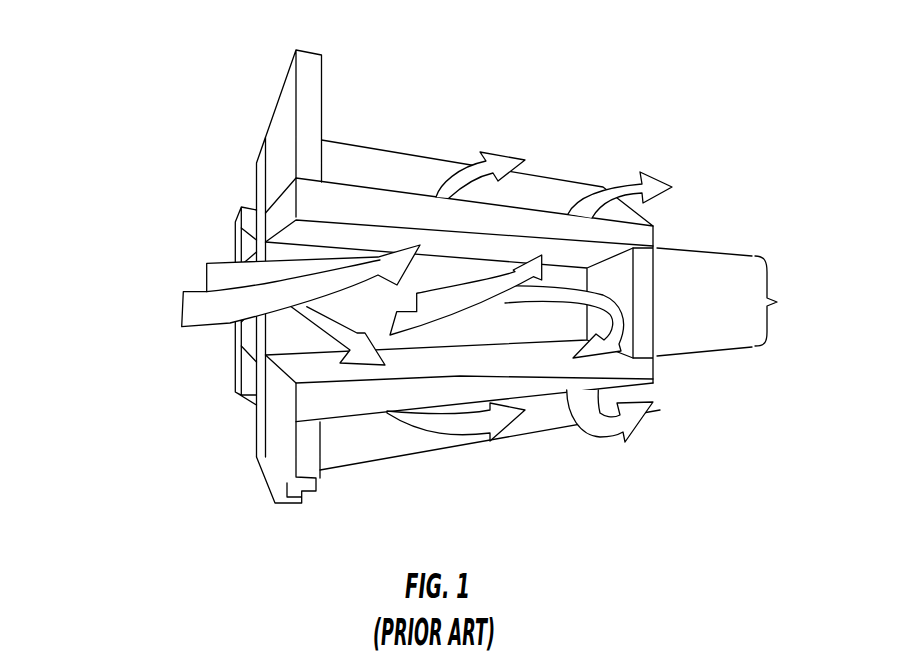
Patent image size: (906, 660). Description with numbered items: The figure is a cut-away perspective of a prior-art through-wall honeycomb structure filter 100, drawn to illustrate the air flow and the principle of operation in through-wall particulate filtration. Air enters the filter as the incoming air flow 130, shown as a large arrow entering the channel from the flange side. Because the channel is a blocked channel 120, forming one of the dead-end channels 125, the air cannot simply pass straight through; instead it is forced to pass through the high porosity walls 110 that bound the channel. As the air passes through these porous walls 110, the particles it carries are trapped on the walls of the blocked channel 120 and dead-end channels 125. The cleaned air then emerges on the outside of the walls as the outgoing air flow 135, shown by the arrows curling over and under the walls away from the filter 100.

The honeycomb structure filter 100 is at (499, 87).
The high porosity walls 110 is at (638, 232).
The blocked channel 120 is at (655, 312).
The dead-end channels 125 is at (736, 302).
The air flow in 130 is at (183, 310).
The air flow out 135 is at (615, 188).